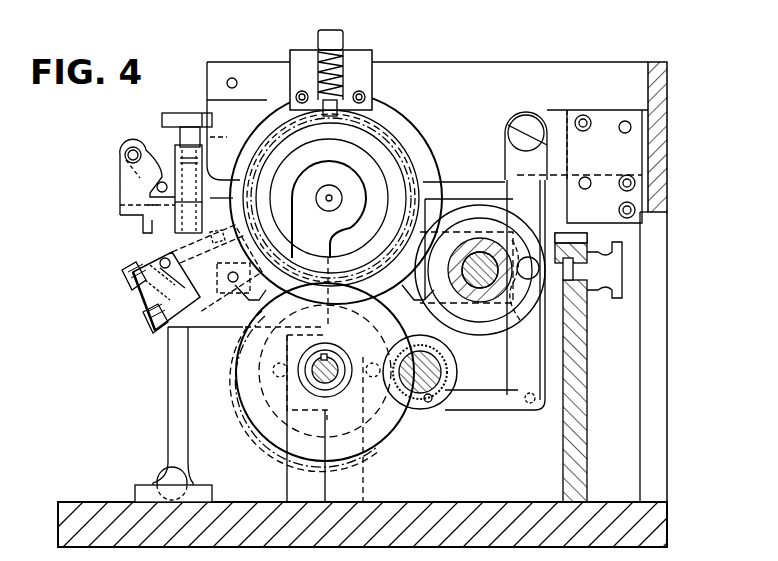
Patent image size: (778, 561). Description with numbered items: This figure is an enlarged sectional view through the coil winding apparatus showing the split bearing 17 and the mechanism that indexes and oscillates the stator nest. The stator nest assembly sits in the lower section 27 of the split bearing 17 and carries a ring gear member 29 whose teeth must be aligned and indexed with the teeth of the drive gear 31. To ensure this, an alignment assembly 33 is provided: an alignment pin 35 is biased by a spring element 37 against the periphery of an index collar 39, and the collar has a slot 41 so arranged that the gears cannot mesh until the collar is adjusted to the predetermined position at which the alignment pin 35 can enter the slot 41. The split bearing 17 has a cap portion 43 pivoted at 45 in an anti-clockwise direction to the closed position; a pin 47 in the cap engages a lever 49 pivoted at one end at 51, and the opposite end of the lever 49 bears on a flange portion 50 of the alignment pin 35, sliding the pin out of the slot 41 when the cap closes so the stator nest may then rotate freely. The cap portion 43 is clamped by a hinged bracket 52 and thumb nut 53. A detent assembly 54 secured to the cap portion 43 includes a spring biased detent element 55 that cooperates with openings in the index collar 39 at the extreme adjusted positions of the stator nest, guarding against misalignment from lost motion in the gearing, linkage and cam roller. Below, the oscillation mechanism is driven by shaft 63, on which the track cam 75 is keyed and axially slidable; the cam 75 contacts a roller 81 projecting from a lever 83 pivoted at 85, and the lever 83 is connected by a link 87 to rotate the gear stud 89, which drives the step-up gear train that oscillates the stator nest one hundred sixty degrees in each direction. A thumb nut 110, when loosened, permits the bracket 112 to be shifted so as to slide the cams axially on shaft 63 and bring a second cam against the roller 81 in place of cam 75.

The split bearing 17 is at (427, 118).
The lower section 27 is at (440, 200).
The ring gear member 29 is at (381, 270).
The drive gear 31 is at (233, 373).
The alignment assembly 33 is at (155, 279).
The alignment pin 35 is at (217, 268).
The spring element 37 is at (137, 312).
The index collar 39 is at (297, 272).
The slot 41 is at (260, 237).
The cap portion 43 is at (277, 100).
The pivot 45 is at (555, 188).
The pin 47 is at (147, 177).
The lever 49 is at (120, 205).
The flange portion 50 is at (189, 414).
The pivot 51 is at (124, 153).
The hinged bracket 52 is at (165, 142).
The thumb nut 53 is at (190, 113).
The detent assembly 54 is at (390, 60).
The spring biased detent element 55 is at (329, 120).
The shaft 63 is at (462, 278).
The cam 75 is at (472, 207).
The roller 81 is at (522, 282).
The lever 83 is at (518, 360).
The pivot 85 is at (530, 117).
The link 87 is at (490, 403).
The gear stud 89 is at (417, 412).
The thumb nut 110 is at (653, 282).
The bracket 112 is at (560, 243).